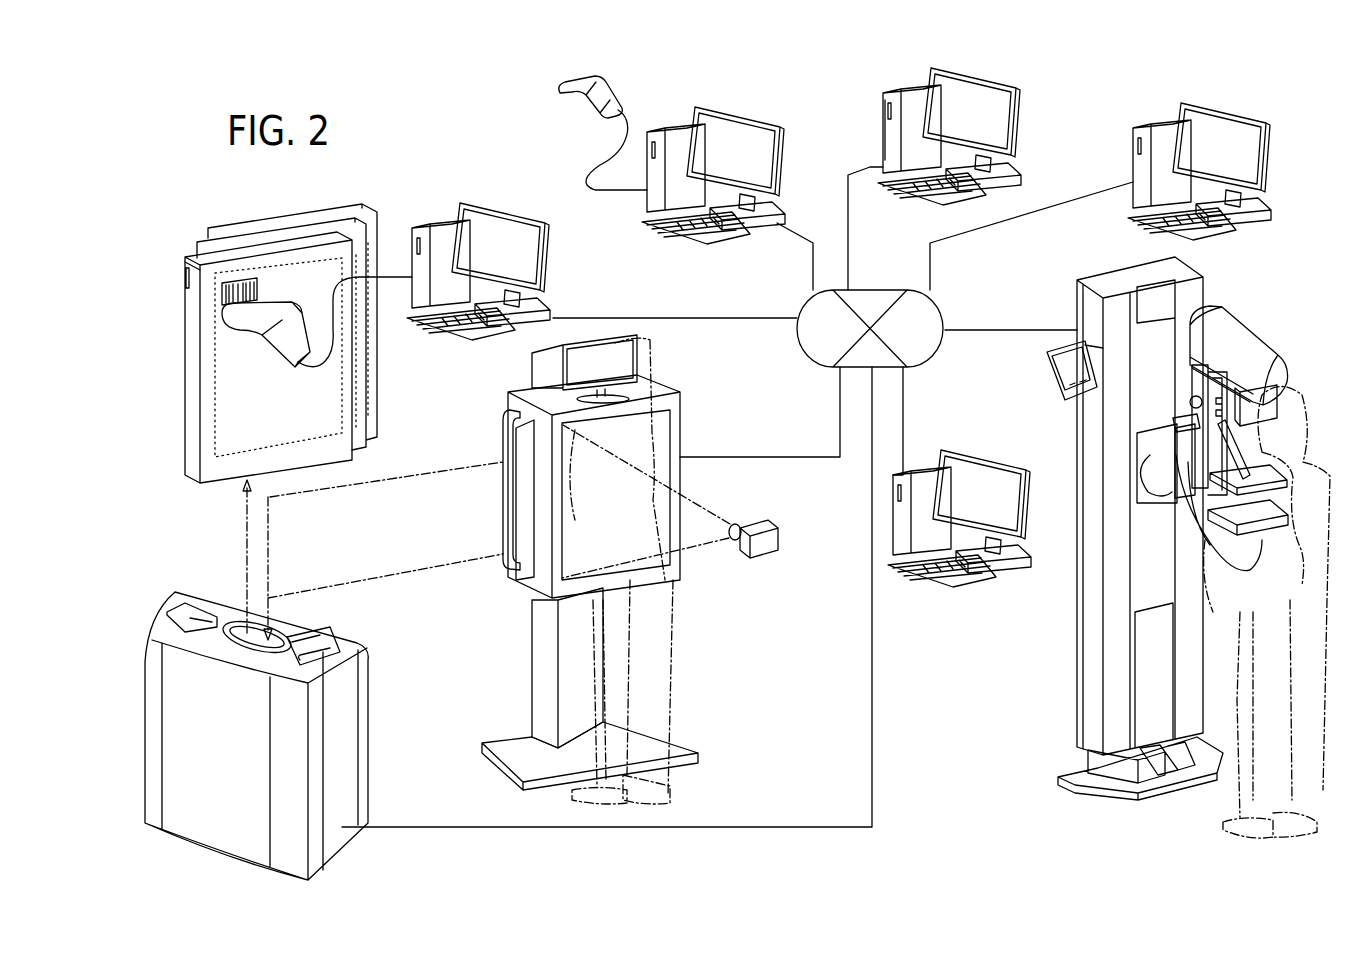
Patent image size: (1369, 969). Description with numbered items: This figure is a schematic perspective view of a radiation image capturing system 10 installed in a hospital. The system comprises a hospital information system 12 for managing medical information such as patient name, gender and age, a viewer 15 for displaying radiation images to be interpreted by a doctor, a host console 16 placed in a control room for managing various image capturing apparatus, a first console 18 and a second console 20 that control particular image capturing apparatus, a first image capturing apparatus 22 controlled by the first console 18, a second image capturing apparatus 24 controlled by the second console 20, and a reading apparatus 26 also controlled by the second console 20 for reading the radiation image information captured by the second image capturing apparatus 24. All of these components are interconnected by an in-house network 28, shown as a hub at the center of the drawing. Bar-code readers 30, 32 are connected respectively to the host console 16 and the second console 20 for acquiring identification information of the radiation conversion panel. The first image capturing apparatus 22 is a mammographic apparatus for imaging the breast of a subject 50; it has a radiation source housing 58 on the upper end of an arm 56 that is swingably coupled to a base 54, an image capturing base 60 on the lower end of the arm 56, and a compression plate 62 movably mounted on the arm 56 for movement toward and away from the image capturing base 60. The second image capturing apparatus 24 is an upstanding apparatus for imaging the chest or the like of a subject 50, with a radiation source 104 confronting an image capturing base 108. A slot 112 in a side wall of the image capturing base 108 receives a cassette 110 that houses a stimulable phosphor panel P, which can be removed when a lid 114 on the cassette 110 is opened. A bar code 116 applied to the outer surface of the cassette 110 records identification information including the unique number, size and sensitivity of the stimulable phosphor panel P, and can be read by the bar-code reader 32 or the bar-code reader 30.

The radiation image capturing system 10 is at (434, 127).
The hospital information system (HIS) 12 is at (883, 131).
The viewer 15 is at (1162, 128).
The host console 16 is at (677, 128).
The first console 18 is at (922, 474).
The second console 20 is at (438, 226).
The first image capturing apparatus 22 is at (1213, 288).
The second image capturing apparatus 24 is at (680, 368).
The reading apparatus 26 is at (173, 700).
The in-house network 28 is at (942, 306).
The bar-code reader 30 is at (593, 113).
The bar-code reader 32 is at (252, 322).
The subject 50 is at (653, 653).
The base 54 is at (1093, 630).
The arm 56 is at (1175, 462).
The radiation source housing 58 is at (1258, 348).
The image capturing base 60 is at (1277, 524).
The compression plate 62 is at (1316, 468).
The radiation source 104 is at (762, 551).
The image capturing base 108 is at (507, 578).
The cassette 110 is at (193, 442).
The slot 112 is at (503, 538).
The lid 114 is at (185, 287).
The bar code 116 is at (262, 287).
The stimulable phosphor panel P is at (322, 400).